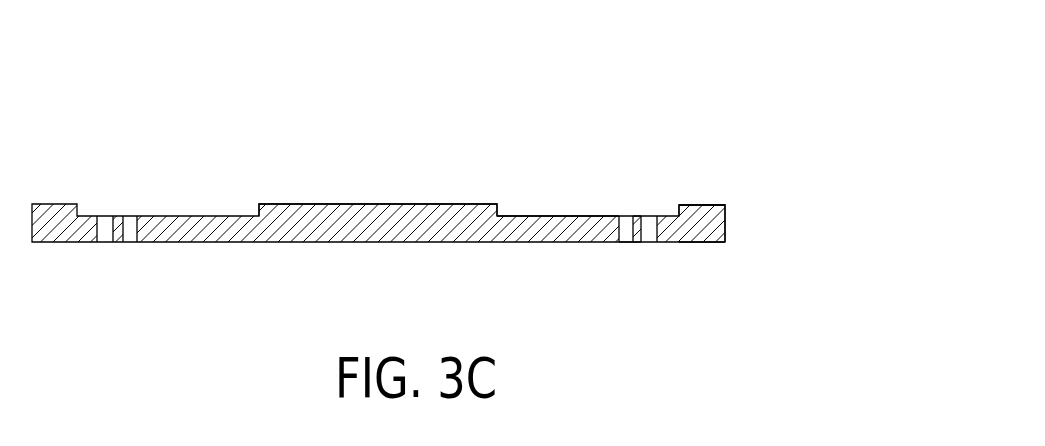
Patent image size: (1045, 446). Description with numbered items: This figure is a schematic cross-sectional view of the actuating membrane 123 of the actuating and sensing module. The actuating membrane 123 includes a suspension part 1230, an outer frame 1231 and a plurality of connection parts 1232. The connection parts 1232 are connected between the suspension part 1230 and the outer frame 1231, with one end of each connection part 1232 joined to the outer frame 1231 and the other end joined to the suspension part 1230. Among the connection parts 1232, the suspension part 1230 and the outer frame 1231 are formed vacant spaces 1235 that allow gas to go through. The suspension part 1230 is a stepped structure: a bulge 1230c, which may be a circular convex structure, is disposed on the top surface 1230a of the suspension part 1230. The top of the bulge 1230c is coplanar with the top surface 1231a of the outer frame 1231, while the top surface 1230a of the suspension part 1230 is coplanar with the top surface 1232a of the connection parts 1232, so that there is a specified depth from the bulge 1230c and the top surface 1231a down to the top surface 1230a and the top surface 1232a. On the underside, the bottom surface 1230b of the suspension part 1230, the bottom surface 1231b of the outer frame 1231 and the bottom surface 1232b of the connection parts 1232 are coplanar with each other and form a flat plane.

The actuating membrane 123 is at (420, 186).
The suspension part 1230 is at (232, 200).
The top surface of the suspension part 1230a is at (563, 216).
The bottom surface of the suspension part 1230b is at (139, 242).
The bulge 1230c is at (378, 204).
The outer frame 1231 is at (743, 225).
The top surface of the outer frame 1231a is at (698, 206).
The bottom surface of the outer frame 1231b is at (705, 242).
The connection parts 1232 is at (643, 194).
The top surface of the connection parts 1232a is at (639, 216).
The bottom surface of the connection parts 1232b is at (636, 242).
The vacant spaces 1235 is at (627, 242).